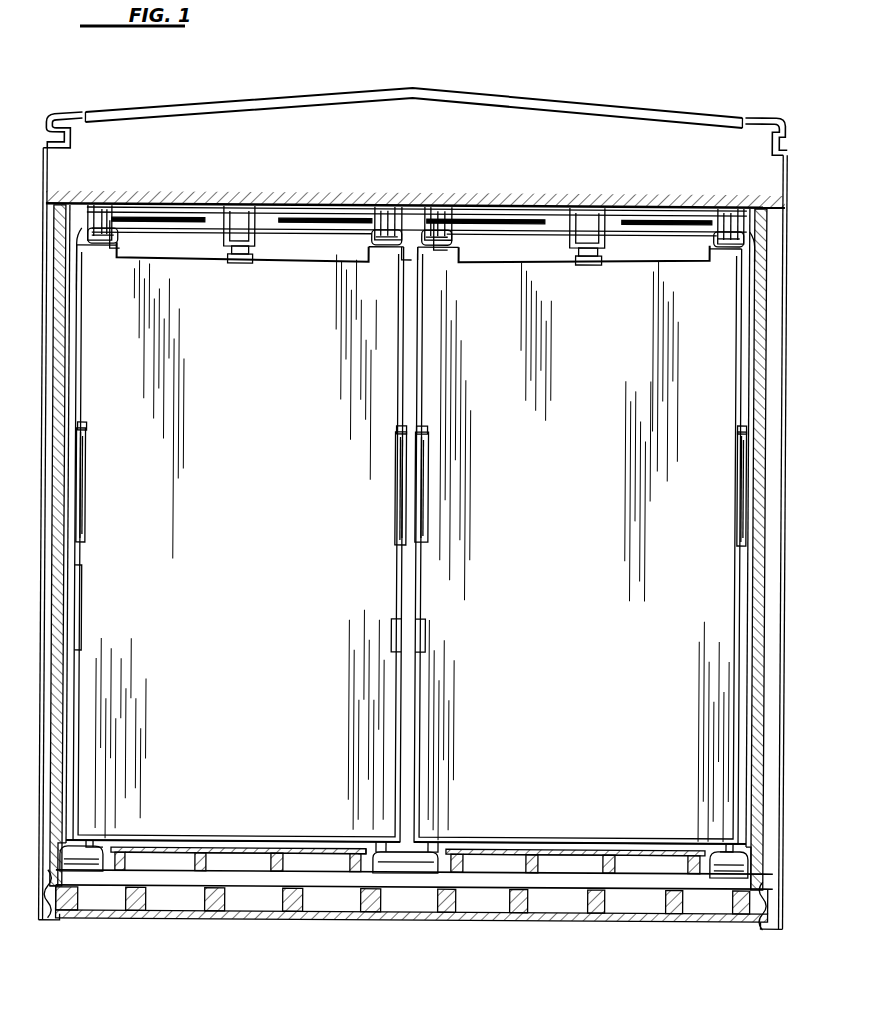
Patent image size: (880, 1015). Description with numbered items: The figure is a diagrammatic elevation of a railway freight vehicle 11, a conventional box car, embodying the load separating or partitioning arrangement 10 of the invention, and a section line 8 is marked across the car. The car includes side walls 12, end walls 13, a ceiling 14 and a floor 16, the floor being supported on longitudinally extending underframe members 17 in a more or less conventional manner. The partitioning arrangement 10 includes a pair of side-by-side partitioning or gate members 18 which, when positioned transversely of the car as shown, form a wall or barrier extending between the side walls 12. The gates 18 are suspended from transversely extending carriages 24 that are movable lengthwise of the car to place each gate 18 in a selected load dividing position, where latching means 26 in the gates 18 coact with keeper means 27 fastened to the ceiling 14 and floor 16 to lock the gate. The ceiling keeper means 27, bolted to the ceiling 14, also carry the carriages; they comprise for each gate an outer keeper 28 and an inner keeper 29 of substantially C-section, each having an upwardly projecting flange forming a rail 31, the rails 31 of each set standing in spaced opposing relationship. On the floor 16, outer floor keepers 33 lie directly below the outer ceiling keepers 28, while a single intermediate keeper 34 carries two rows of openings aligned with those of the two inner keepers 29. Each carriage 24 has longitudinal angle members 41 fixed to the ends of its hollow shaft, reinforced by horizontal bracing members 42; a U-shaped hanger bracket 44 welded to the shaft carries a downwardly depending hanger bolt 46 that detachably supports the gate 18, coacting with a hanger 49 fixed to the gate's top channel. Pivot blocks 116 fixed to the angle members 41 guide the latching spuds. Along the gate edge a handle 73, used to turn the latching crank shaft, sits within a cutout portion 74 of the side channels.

The section line 8- 8 is at (142, 182).
The load separating or partitioning arrangement 10 is at (439, 170).
The railway freight vehicle 11 is at (640, 98).
The side walls 12 is at (45, 392).
The end walls 13 is at (545, 232).
The ceiling 14 is at (415, 185).
The floor 16 is at (250, 870).
The longitudinally extending underframe members 17 is at (140, 910).
The partitioning members 18 is at (250, 459).
The carriages 24 is at (198, 206).
The latching means 26 is at (84, 473).
The keeper means 27 is at (90, 206).
The outer keeper 28 is at (88, 249).
The inner keeper 29 is at (396, 254).
The rail 31 is at (118, 231).
The outer floor keepers 33 is at (92, 845).
The intermediate keeper 34 is at (437, 848).
The angle members 41 is at (115, 242).
The horizontal bracing members 42 is at (148, 218).
The hanger bracket 44 is at (222, 231).
The hanger bolt 46 is at (240, 264).
The hanger 49 is at (255, 253).
The handle 73 is at (82, 520).
The cutout portion 74 is at (78, 598).
The pivot blocks 116 is at (104, 290).